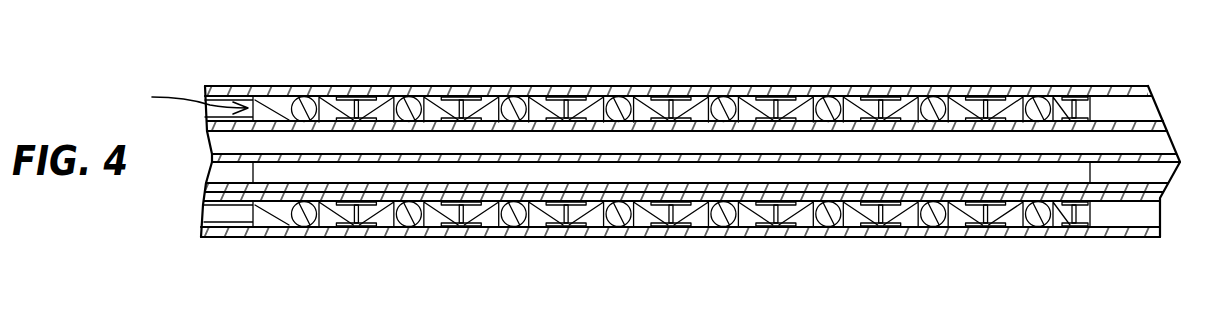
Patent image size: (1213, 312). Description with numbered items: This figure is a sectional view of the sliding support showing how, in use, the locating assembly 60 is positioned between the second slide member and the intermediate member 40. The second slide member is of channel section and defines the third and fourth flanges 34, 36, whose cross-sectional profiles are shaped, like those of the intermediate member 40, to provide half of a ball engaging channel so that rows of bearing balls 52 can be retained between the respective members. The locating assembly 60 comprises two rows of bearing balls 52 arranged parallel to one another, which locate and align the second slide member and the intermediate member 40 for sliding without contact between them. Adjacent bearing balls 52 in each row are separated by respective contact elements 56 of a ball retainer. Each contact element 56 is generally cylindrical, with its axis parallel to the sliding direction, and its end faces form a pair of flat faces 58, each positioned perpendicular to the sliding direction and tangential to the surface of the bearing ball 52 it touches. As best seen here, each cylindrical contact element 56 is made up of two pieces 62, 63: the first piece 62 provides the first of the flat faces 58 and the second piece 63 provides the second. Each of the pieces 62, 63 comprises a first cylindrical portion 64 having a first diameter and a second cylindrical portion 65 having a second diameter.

The third flange 34 is at (507, 237).
The fourth flange 36 is at (482, 93).
The intermediate member 40 is at (245, 133).
The bearing balls 52 is at (617, 220).
The contact element 56 is at (780, 213).
The flat faces 58 is at (310, 98).
The locating assembly 60 is at (184, 99).
The first piece 62 is at (743, 108).
The second piece 63 is at (805, 108).
The first cylindrical portion 64 is at (1018, 103).
The second cylindrical portion 65 is at (993, 103).